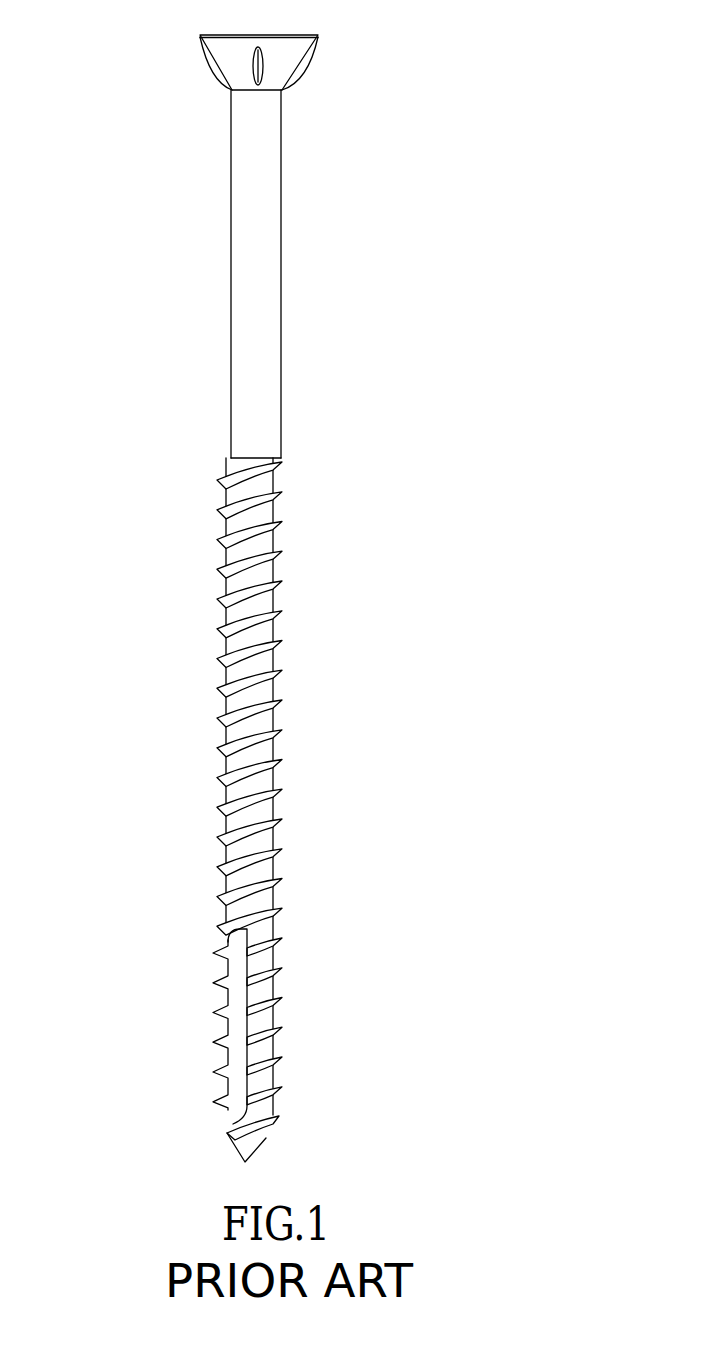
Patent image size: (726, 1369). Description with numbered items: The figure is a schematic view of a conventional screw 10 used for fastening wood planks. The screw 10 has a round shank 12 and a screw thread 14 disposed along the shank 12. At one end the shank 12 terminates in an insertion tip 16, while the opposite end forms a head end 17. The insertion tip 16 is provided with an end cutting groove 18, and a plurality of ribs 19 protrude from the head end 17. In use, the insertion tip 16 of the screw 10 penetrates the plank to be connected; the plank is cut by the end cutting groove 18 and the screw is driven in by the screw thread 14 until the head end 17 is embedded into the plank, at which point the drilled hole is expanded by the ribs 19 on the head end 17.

The screw 10 is at (168, 996).
The shank 12 is at (255, 415).
The screw thread 14 is at (278, 490).
The insertion tip 16 is at (247, 1142).
The head end 17 is at (300, 44).
The end cutting groove 18 is at (233, 1072).
The ribs 19 is at (300, 77).